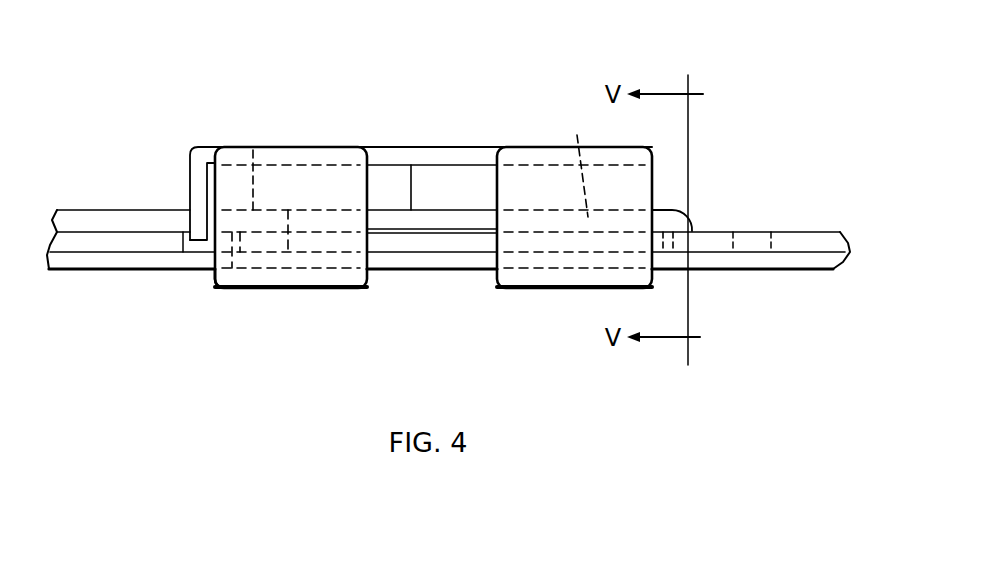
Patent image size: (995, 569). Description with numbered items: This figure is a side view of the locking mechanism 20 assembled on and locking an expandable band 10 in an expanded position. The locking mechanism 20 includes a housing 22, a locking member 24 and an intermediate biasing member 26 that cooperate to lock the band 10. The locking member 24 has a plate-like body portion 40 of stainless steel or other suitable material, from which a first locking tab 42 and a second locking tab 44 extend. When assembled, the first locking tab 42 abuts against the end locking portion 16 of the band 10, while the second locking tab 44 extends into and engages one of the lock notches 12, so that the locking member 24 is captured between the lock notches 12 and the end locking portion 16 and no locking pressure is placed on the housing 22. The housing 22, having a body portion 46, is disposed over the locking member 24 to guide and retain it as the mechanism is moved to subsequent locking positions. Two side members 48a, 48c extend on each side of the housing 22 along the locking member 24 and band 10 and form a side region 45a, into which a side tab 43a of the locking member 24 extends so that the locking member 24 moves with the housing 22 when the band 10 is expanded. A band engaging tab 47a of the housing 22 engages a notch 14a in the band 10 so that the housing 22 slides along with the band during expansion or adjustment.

The locking mechanism 20 is at (419, 41).
The expandable band 10 is at (393, 262).
The lock notch 12 is at (753, 280).
The notch 14a is at (190, 248).
The end locking portion 16 is at (203, 293).
The housing 22 is at (400, 128).
The locking member 24 is at (672, 197).
The intermediate biasing member 26 is at (377, 183).
The body portion 40 is at (577, 135).
The first locking tab 42 is at (251, 150).
The side tab 43a is at (437, 223).
The second locking tab 44 is at (685, 235).
The side region 45a is at (428, 197).
The body portion 46 is at (203, 155).
The band engaging tab 47a is at (197, 228).
The side member 48a is at (600, 280).
The side member 48c is at (302, 280).